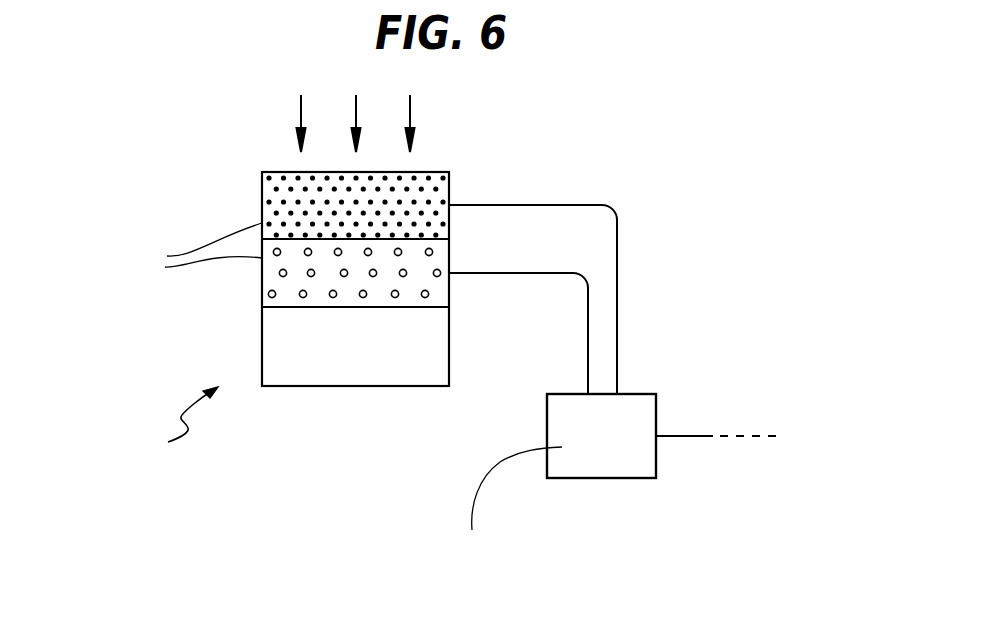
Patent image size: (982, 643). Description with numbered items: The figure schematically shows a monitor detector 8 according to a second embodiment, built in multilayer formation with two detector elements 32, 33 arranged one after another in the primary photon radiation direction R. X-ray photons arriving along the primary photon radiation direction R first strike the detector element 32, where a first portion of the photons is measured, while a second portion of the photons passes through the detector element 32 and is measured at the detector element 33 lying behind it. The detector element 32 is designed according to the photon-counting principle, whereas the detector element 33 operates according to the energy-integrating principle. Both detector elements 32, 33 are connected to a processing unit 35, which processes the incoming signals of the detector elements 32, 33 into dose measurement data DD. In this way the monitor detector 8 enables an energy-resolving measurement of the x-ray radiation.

The monitor detector 8 is at (250, 340).
The detector element 32 is at (262, 205).
The detector element 33 is at (262, 277).
The processing unit 35 is at (602, 478).
The primary photon radiation direction R is at (427, 113).
The dose measurement data DD is at (703, 437).